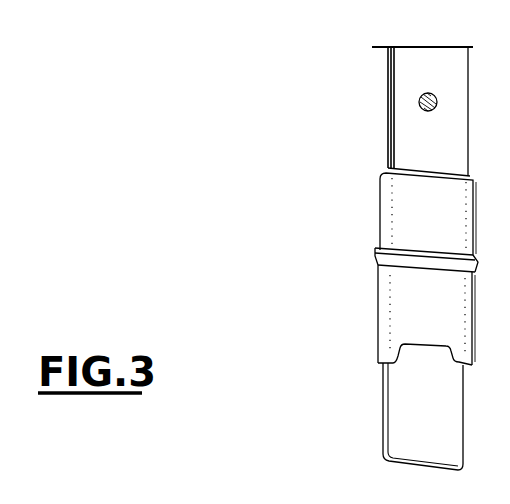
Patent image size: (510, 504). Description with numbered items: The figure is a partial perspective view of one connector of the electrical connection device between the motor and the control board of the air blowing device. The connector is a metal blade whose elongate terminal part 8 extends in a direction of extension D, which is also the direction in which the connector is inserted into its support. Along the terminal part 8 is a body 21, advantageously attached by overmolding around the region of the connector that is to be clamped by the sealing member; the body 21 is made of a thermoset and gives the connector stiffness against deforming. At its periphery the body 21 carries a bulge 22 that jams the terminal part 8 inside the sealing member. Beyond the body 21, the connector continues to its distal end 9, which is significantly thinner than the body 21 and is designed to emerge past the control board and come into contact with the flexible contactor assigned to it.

The terminal part 8 is at (364, 119).
The body 21 is at (406, 214).
The bulge 22 is at (402, 247).
The distal end 9 is at (403, 416).
The direction of extension D is at (308, 150).